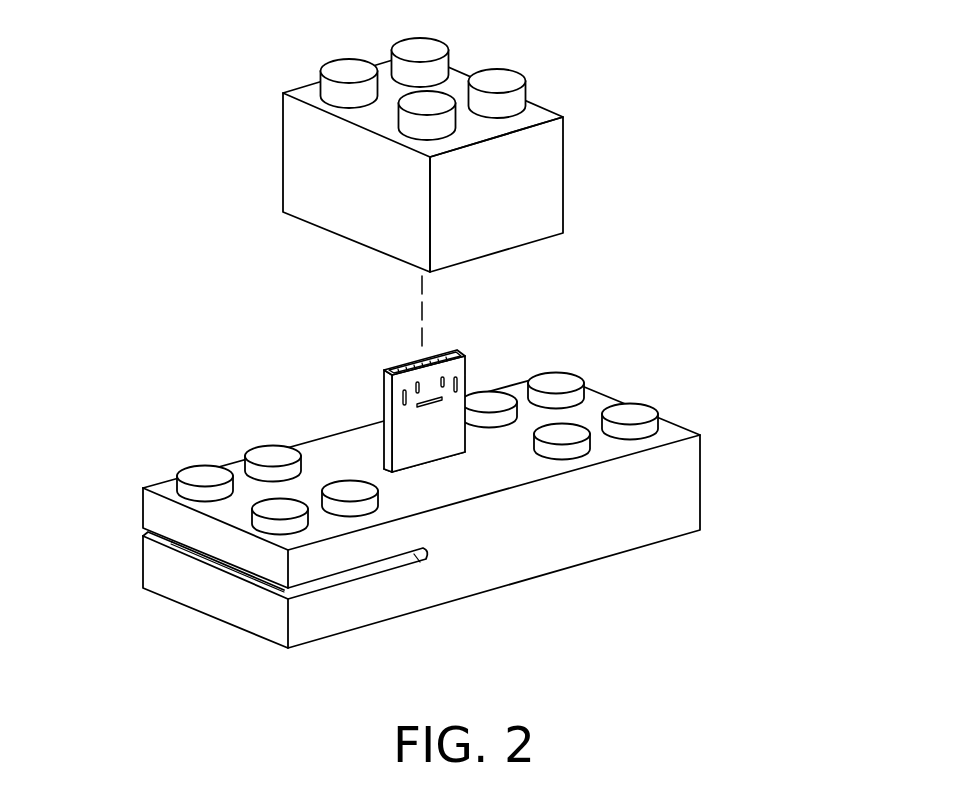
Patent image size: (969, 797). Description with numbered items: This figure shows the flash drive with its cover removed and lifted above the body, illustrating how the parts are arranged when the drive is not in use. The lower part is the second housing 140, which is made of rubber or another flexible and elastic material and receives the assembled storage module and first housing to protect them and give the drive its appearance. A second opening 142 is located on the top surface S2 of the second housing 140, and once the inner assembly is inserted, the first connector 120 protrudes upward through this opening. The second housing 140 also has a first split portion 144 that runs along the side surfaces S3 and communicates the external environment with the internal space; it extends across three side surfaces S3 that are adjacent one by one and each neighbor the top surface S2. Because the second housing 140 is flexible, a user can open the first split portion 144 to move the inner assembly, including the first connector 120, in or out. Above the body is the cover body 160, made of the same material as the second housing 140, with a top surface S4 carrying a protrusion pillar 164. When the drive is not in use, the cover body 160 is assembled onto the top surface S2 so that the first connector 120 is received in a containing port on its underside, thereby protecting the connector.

The first connector 120 is at (402, 417).
The second housing 140 is at (401, 499).
The second opening 142 is at (432, 460).
The first split portion 144 is at (338, 578).
The cover body 160 is at (454, 136).
The protrusion pillar 164 is at (423, 47).
The top surface S2 is at (450, 485).
The side surface S3 is at (140, 553).
The top surface S4 is at (542, 113).